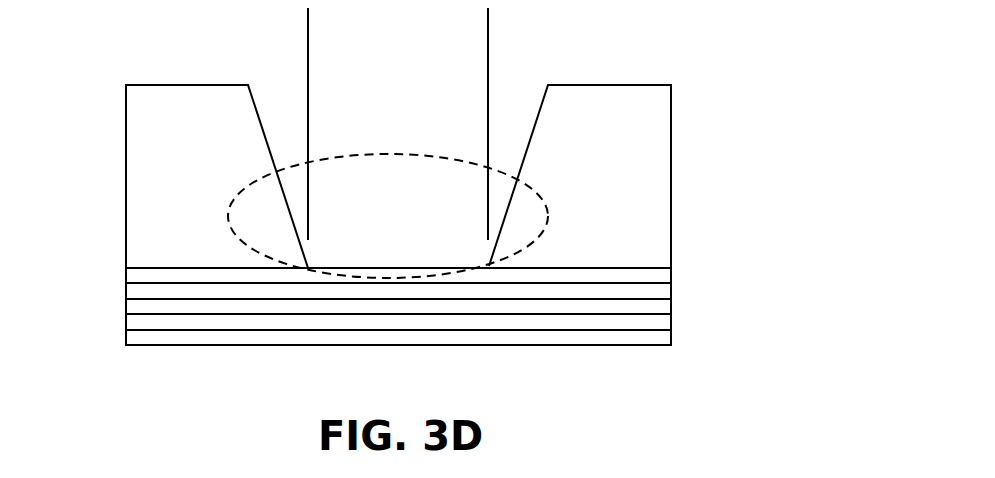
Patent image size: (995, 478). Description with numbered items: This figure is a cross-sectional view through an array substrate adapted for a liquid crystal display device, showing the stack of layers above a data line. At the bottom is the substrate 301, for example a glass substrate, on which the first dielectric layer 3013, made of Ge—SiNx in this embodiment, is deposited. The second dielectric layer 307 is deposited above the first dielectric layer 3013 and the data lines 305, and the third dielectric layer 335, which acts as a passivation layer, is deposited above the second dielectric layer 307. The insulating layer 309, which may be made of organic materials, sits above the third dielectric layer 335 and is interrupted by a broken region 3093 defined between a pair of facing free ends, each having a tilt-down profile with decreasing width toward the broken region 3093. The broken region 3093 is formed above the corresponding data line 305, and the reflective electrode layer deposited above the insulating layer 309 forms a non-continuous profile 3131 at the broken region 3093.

The substrate 301 is at (140, 336).
The first dielectric layer 3013 is at (660, 320).
The data lines 305 is at (145, 308).
The second dielectric layer 307 is at (660, 289).
The insulating layer 309 is at (160, 202).
The non-continuous profile 3131 is at (537, 188).
The broken region 3093 is at (488, 59).
The third dielectric layer 335 is at (292, 277).